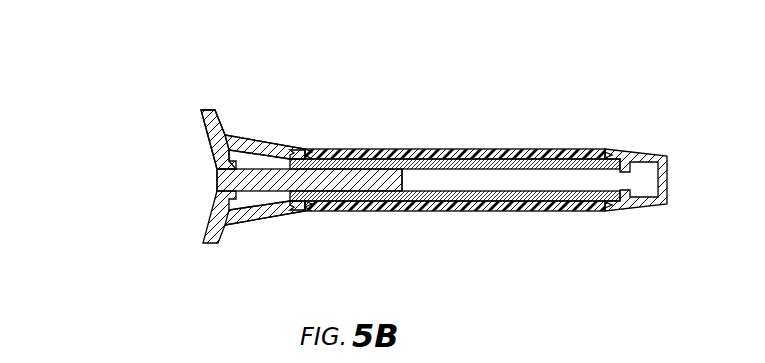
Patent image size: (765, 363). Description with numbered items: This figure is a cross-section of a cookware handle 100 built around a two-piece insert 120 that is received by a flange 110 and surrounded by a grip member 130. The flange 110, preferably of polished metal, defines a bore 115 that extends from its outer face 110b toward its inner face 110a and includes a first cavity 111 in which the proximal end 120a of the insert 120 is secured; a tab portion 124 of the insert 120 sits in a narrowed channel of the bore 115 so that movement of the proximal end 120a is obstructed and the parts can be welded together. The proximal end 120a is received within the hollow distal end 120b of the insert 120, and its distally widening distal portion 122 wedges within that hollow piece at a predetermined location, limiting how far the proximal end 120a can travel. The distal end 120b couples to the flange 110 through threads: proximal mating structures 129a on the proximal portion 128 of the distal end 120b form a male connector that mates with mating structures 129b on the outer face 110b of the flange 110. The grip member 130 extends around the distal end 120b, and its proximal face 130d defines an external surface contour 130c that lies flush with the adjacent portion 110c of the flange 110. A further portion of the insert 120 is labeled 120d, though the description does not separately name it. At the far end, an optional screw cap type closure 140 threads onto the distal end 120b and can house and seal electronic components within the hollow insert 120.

The handle 100 is at (133, 150).
The flange 110 is at (217, 243).
The inner face 110a is at (207, 132).
The outer face 110b is at (340, 148).
The adjacent portion 110c is at (327, 148).
The first cavity 111 is at (264, 160).
The bore 115 is at (240, 152).
The insert 120 is at (397, 160).
The proximal end 120a is at (369, 174).
The distal end 120b is at (565, 170).
The shaft proximal end 120d is at (215, 181).
The distal portion 122 is at (427, 161).
The tab portion 124 is at (217, 193).
The proximal portion 128 is at (303, 208).
The proximal mating structures 129a is at (300, 148).
The mating structures 129b is at (315, 150).
The grip member 130 is at (507, 209).
The external surface contour 130c is at (310, 213).
The proximal face 130d is at (327, 213).
The closure 140 is at (640, 205).